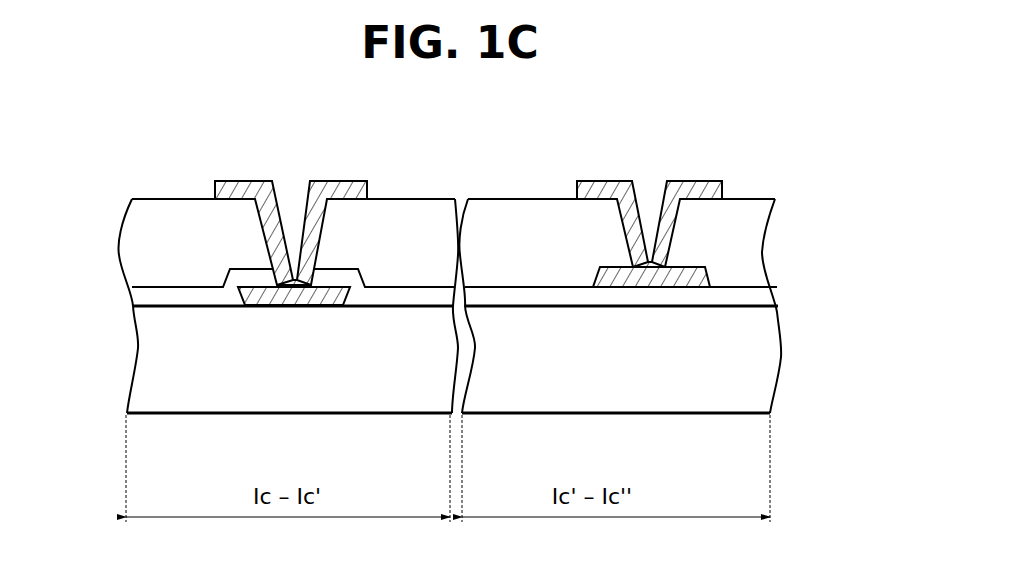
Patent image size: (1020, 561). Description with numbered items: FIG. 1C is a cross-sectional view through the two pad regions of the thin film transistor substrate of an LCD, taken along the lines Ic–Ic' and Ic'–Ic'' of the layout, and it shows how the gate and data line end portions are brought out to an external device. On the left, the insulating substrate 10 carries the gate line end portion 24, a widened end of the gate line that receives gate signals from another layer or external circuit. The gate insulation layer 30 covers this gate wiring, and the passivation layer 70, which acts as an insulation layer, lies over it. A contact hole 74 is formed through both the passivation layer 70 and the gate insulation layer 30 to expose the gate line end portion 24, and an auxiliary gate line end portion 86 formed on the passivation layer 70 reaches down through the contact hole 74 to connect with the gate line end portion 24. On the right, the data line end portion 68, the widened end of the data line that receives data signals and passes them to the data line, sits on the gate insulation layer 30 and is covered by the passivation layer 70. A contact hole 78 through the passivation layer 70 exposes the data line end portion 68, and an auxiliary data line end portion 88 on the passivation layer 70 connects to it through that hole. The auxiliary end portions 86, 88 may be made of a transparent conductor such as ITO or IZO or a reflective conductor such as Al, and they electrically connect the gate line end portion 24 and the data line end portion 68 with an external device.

The insulating substrate 10 is at (163, 380).
The gate line end portion 24 is at (243, 302).
The gate insulation layer 30 is at (395, 308).
The contact hole 74 is at (286, 178).
The auxiliary gate line end portion 86 is at (342, 181).
The passivation layer 70 is at (505, 268).
The data line end portion 68 is at (643, 282).
The contact hole 78 is at (644, 168).
The auxiliary data line end portion 88 is at (697, 179).